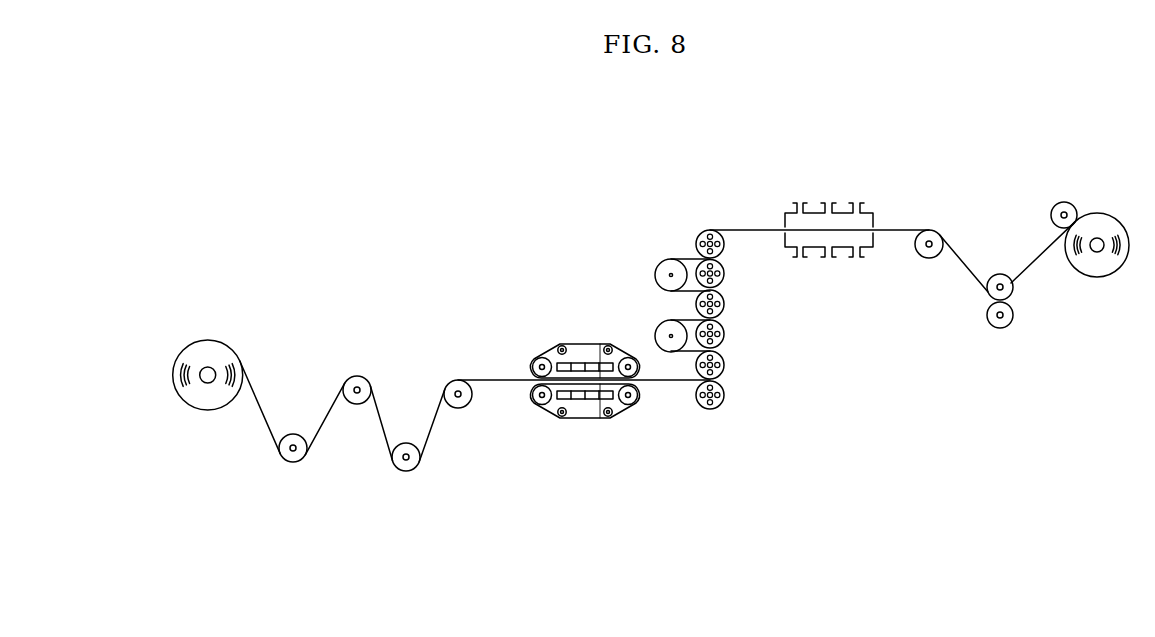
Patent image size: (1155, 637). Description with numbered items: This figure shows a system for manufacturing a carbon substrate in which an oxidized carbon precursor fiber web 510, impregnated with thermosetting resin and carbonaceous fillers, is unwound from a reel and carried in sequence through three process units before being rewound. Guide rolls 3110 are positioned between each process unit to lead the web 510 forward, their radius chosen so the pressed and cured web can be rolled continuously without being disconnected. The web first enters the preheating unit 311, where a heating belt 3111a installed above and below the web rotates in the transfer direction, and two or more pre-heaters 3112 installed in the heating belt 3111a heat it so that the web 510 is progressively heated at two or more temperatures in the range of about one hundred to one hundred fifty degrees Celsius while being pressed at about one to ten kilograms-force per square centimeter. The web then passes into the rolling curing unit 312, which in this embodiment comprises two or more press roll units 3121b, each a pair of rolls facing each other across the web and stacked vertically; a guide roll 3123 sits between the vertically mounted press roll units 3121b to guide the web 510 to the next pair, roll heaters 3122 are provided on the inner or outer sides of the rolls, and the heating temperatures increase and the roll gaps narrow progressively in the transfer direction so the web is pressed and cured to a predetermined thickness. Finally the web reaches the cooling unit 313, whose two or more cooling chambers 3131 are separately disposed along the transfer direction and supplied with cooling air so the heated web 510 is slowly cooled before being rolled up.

The oxidized carbon precursor fiber web 510 is at (488, 380).
The guide roll 3110 is at (300, 437).
The preheating unit 311 is at (576, 275).
The heating belt 3111a is at (578, 345).
The pre-heater 3112 is at (556, 363).
The rolling curing unit 312 is at (698, 167).
The press roll unit 3121b is at (718, 232).
The roll heater 3122 is at (700, 233).
The guide roll 3123 is at (663, 261).
The cooling unit 313 is at (833, 168).
The cooling chamber 3131 is at (813, 248).